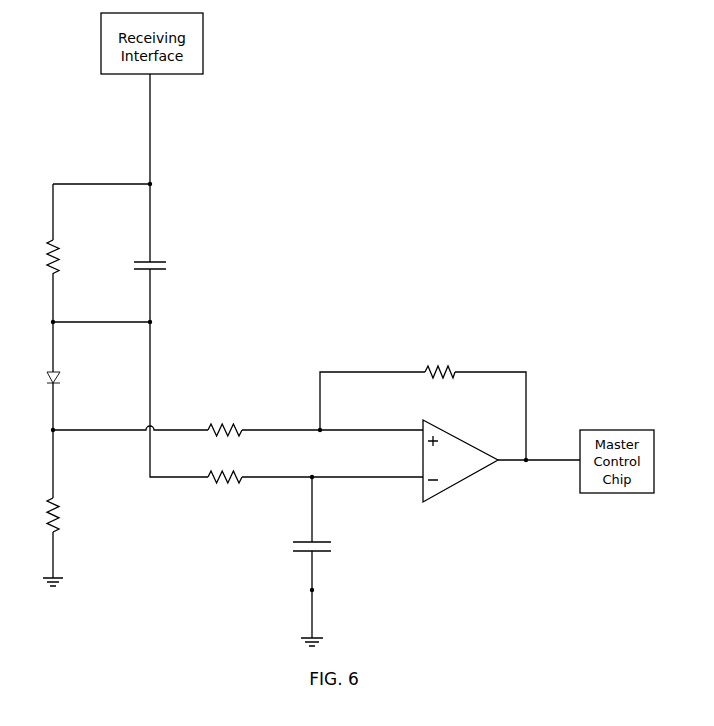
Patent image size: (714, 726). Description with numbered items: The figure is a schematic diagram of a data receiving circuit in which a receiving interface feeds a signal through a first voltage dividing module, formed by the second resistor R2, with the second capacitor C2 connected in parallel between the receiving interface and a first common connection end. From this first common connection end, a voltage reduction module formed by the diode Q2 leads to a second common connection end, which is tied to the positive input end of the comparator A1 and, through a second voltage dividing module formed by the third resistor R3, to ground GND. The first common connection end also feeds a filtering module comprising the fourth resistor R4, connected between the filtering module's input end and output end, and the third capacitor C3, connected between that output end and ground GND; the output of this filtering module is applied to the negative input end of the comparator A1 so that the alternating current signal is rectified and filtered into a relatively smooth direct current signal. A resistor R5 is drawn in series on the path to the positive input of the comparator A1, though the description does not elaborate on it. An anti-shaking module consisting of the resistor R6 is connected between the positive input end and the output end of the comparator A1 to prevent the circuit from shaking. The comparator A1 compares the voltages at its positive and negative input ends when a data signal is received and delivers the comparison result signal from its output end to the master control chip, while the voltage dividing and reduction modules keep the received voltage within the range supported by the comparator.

The second resistor R2 is at (39, 257).
The second capacitor C2 is at (137, 268).
The diode Q2 is at (40, 377).
The third resistor R3 is at (39, 515).
The resistor R5 is at (225, 442).
The fourth resistor R4 is at (225, 488).
The resistor R6 is at (440, 383).
The comparator A1 is at (460, 461).
The third capacitor C3 is at (299, 547).
The ground GND is at (201, 598).